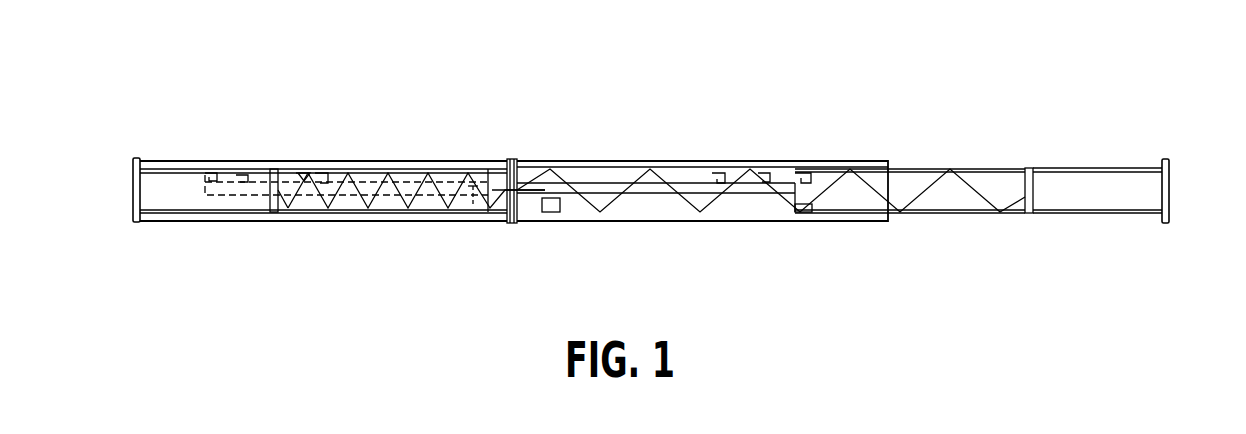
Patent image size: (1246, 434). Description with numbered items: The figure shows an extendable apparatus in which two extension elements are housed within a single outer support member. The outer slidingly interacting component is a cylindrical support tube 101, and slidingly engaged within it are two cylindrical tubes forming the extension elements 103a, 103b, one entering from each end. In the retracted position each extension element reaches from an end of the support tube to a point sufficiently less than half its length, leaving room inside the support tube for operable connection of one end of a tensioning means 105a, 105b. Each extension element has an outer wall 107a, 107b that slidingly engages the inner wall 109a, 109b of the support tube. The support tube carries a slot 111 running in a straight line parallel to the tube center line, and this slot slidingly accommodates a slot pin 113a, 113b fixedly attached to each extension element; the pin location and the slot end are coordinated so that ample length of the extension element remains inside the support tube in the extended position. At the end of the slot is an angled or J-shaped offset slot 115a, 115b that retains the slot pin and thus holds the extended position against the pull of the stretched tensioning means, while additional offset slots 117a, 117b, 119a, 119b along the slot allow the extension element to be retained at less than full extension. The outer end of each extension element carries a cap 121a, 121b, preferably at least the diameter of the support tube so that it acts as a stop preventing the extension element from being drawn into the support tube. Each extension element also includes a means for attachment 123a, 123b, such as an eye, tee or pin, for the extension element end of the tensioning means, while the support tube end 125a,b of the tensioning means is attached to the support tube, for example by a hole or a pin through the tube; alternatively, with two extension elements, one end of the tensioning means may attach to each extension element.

The support tube 101 is at (748, 223).
The extension element 103a is at (178, 190).
The extension element 103b is at (1073, 198).
The tensioning means 105a is at (398, 178).
The tensioning means 105b is at (970, 180).
The outer wall 107a is at (390, 213).
The outer wall 107b is at (965, 217).
The inner wall 109a is at (303, 172).
The inner wall 109b is at (655, 200).
The slot 111 is at (545, 213).
The slot pin 113a is at (473, 218).
The slot pin 113b is at (817, 213).
The offset slot 115a is at (205, 172).
The offset slot 115b is at (810, 172).
The offset slot 117a is at (241, 172).
The offset slot 117b is at (764, 172).
The offset slot 119a is at (322, 172).
The offset slot 119b is at (722, 172).
The cap 121a is at (132, 210).
The cap 121b is at (1169, 215).
The means for attachment 123a is at (275, 213).
The means for attachment 123b is at (1027, 213).
The support tube end of the tensioning means 125a,b is at (513, 160).